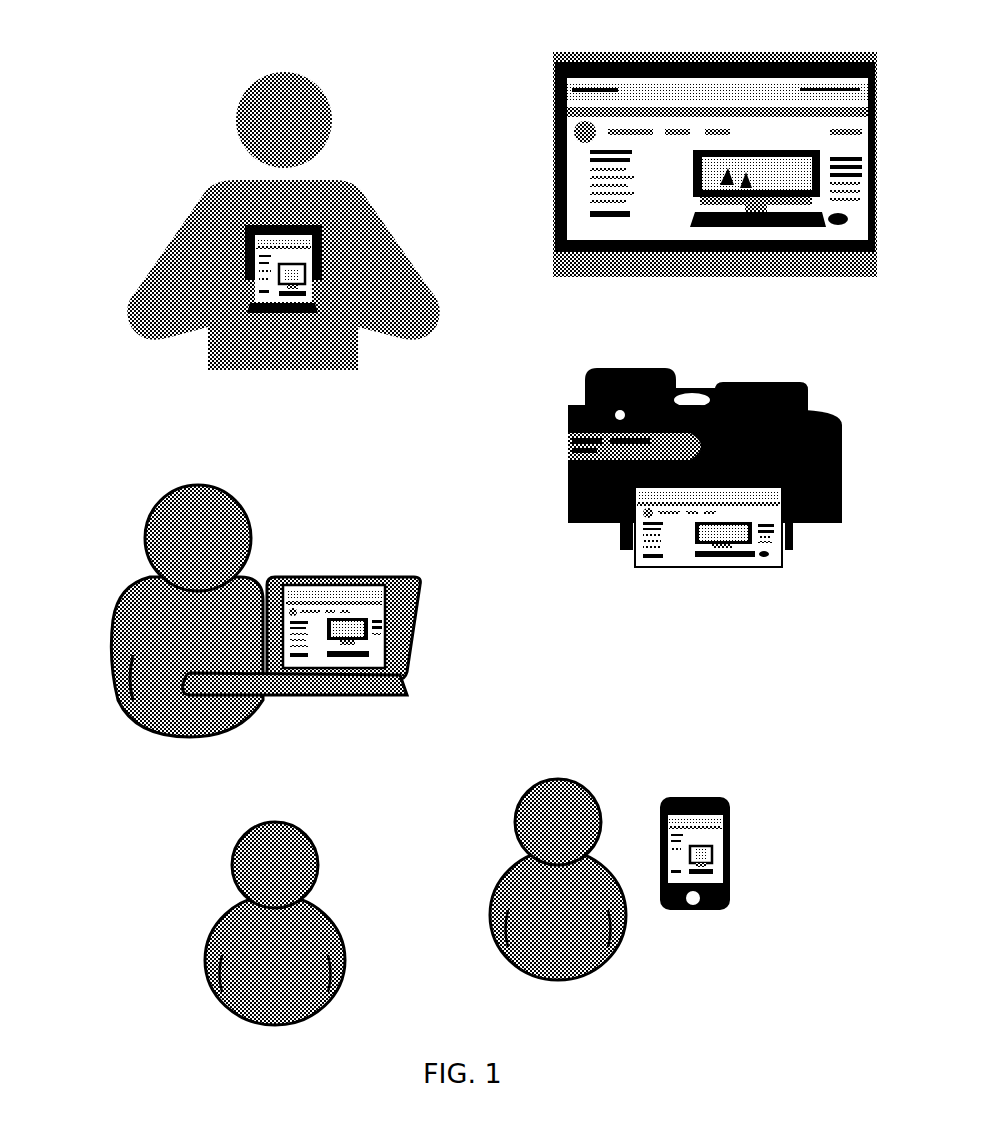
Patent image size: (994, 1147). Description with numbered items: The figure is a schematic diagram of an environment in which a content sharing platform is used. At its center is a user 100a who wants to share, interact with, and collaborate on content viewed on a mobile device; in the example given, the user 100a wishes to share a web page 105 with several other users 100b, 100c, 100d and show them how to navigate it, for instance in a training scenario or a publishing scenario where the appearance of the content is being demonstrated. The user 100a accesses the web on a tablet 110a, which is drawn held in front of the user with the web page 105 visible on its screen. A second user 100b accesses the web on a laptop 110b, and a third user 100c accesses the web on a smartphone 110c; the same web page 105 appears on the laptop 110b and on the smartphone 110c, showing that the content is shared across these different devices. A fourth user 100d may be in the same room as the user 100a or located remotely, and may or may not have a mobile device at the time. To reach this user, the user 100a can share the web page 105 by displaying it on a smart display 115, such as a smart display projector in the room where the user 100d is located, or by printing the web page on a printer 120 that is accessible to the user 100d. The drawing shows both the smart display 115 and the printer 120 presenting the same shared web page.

The user 100a is at (328, 97).
The user 100b is at (247, 512).
The user 100c is at (553, 778).
The user 100d is at (315, 898).
The web page 105 is at (285, 257).
The tablet 110a is at (323, 245).
The laptop 110b is at (305, 572).
The smartphone 110c is at (695, 798).
The smart display 115 is at (716, 53).
The printer 120 is at (620, 368).